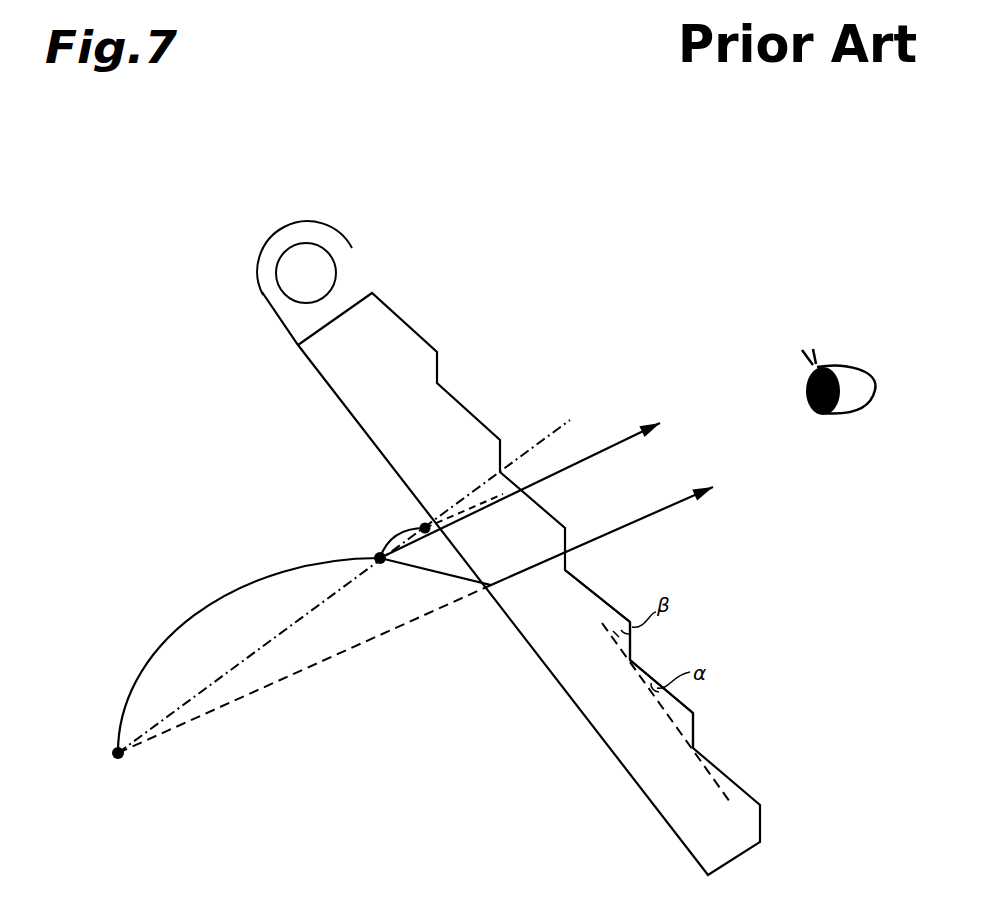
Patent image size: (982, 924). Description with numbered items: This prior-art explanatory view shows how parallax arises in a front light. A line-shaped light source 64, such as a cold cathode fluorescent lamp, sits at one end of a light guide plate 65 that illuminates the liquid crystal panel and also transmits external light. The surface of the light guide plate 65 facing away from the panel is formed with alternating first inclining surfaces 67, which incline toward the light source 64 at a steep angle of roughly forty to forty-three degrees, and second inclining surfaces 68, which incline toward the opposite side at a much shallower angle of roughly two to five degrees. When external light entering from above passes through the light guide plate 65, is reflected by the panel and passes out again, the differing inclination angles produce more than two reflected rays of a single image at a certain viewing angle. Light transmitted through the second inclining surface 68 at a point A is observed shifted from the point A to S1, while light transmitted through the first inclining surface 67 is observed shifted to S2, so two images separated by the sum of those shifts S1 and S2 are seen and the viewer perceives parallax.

The line-shaped light source 64 is at (280, 292).
The light guide plate 65 is at (723, 857).
The first inclining surface 67 is at (630, 640).
The second inclining surface 68 is at (580, 580).
The shifted observation position S1 is at (388, 530).
The shifted observation position S2 is at (180, 630).
The point A is at (377, 556).